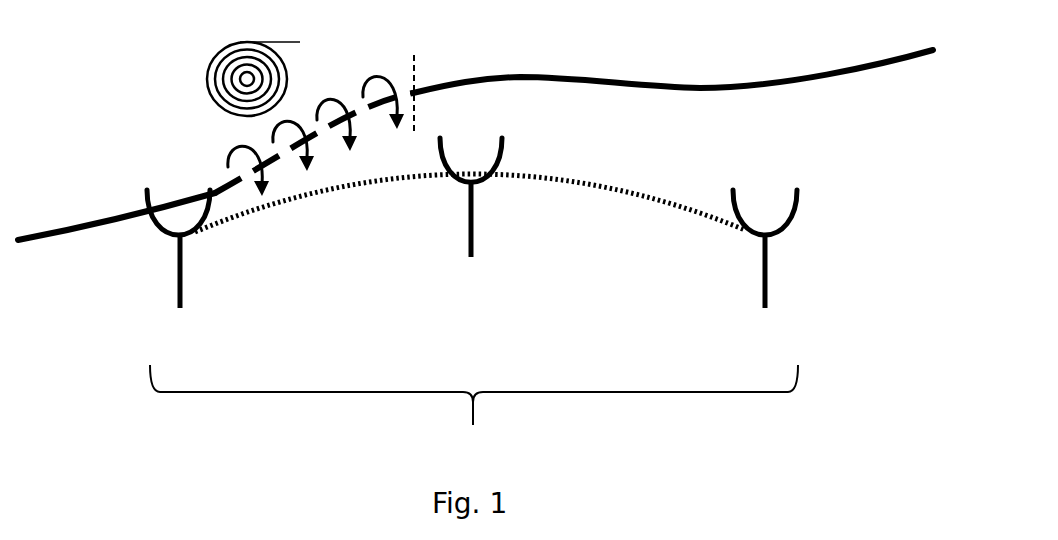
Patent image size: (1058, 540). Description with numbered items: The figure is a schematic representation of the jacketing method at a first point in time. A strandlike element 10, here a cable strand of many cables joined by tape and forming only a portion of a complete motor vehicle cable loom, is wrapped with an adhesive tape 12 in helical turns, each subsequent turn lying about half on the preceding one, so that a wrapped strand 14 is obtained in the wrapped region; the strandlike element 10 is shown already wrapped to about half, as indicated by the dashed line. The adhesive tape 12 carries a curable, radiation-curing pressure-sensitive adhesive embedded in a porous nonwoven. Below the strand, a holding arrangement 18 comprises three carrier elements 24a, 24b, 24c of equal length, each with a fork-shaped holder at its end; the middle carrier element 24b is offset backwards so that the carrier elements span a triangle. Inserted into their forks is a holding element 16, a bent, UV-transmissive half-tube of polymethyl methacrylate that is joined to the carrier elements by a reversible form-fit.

The strandlike element 10 is at (842, 66).
The adhesive tape 12 is at (291, 63).
The wrapped strand 14 is at (93, 218).
The holding element 16 is at (642, 193).
The holding arrangement 18 is at (474, 411).
The carrier element 24a is at (180, 314).
The carrier element 24b is at (471, 263).
The carrier element 24c is at (765, 314).